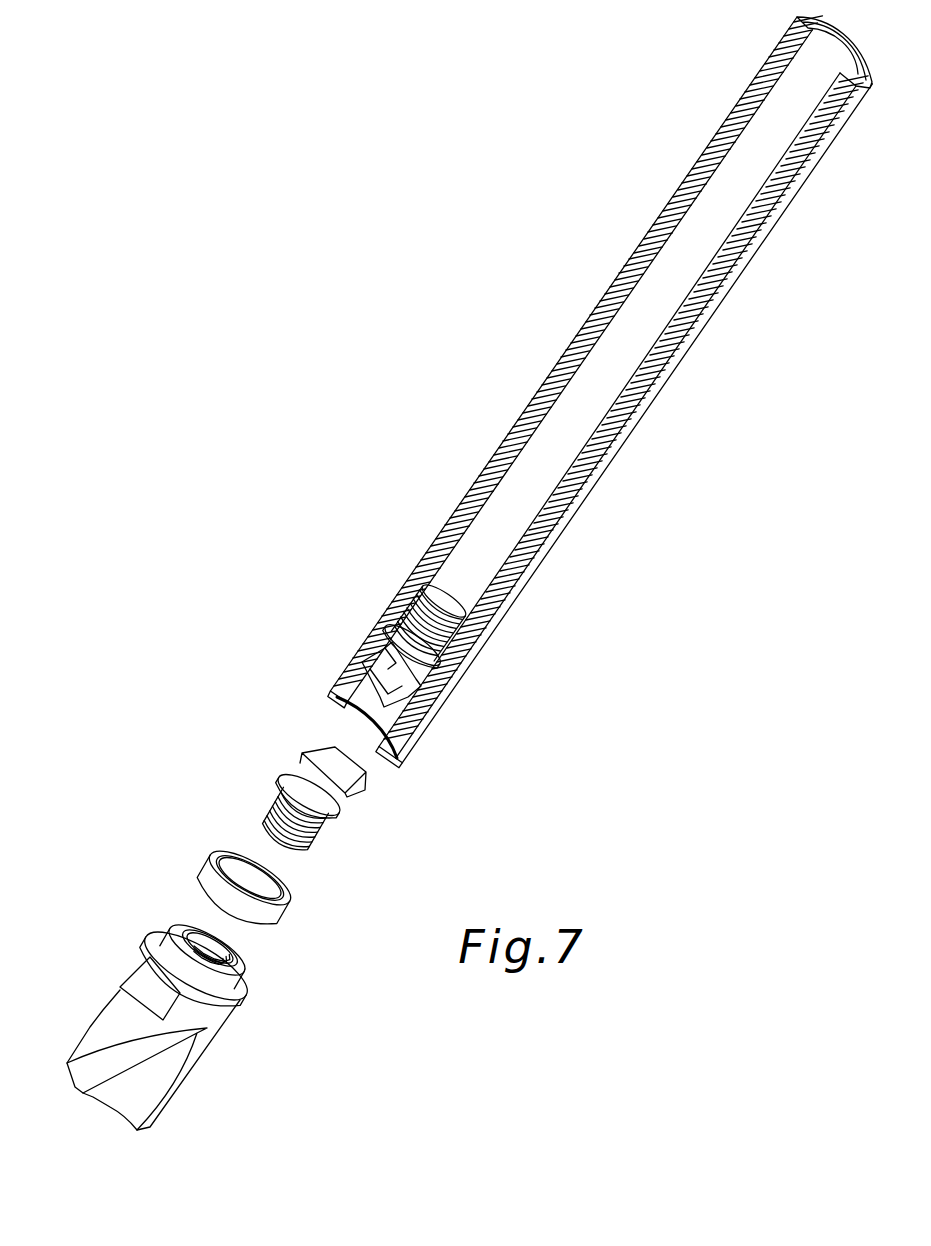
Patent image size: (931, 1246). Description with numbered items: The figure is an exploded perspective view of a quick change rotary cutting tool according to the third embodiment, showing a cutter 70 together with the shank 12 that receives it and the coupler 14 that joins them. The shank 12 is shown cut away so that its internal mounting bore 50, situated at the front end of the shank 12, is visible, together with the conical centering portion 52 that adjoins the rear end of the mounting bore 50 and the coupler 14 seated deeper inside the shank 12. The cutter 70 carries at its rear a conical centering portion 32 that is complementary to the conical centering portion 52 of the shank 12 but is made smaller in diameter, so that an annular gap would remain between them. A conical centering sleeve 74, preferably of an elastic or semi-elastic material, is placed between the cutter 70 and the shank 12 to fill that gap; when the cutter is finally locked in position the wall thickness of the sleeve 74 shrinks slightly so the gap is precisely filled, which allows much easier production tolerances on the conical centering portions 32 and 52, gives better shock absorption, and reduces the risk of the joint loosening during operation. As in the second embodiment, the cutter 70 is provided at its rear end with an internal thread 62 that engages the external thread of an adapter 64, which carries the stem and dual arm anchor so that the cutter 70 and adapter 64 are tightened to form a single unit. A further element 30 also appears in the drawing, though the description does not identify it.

The shank 12 is at (510, 428).
The coupler 14 is at (378, 633).
The shoulder 30 is at (242, 987).
The conical centering portion 32 is at (176, 947).
The internal mounting bore 50 is at (367, 722).
The conical centering portion 52 is at (337, 687).
The internal thread 62 is at (205, 945).
The adapter 64 is at (292, 790).
The cutter 70 is at (179, 978).
The conical centering sleeve 74 is at (305, 897).